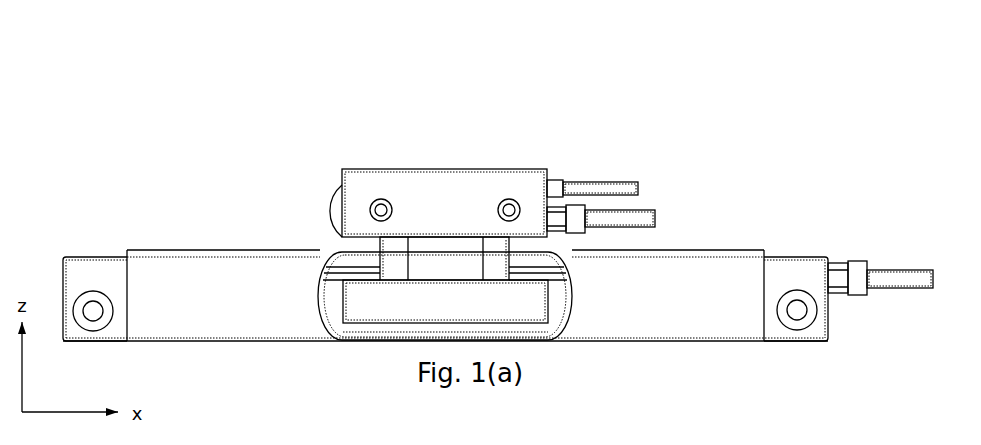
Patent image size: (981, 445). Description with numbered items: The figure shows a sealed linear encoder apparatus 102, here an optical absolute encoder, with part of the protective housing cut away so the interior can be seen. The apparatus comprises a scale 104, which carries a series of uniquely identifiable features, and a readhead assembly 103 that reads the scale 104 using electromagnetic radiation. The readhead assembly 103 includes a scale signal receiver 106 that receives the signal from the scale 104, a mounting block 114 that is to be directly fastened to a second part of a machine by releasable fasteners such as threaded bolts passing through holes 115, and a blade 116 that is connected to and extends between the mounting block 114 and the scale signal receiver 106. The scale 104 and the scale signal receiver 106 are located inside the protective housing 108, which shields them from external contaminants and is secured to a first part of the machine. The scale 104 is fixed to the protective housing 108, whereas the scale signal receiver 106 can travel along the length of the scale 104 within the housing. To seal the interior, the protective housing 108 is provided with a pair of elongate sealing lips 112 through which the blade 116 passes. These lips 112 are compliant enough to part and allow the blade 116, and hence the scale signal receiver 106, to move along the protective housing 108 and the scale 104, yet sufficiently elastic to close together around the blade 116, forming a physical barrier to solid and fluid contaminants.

The sealed linear encoder apparatus 102 is at (769, 88).
The readhead assembly 103 is at (640, 150).
The scale 104 is at (543, 340).
The scale signal receiver 106 is at (373, 328).
The protective housing 108 is at (732, 325).
The elongate sealing lips 112 is at (358, 258).
The mounting block 114 is at (528, 188).
The holes 115 is at (380, 200).
The blade 116 is at (454, 250).